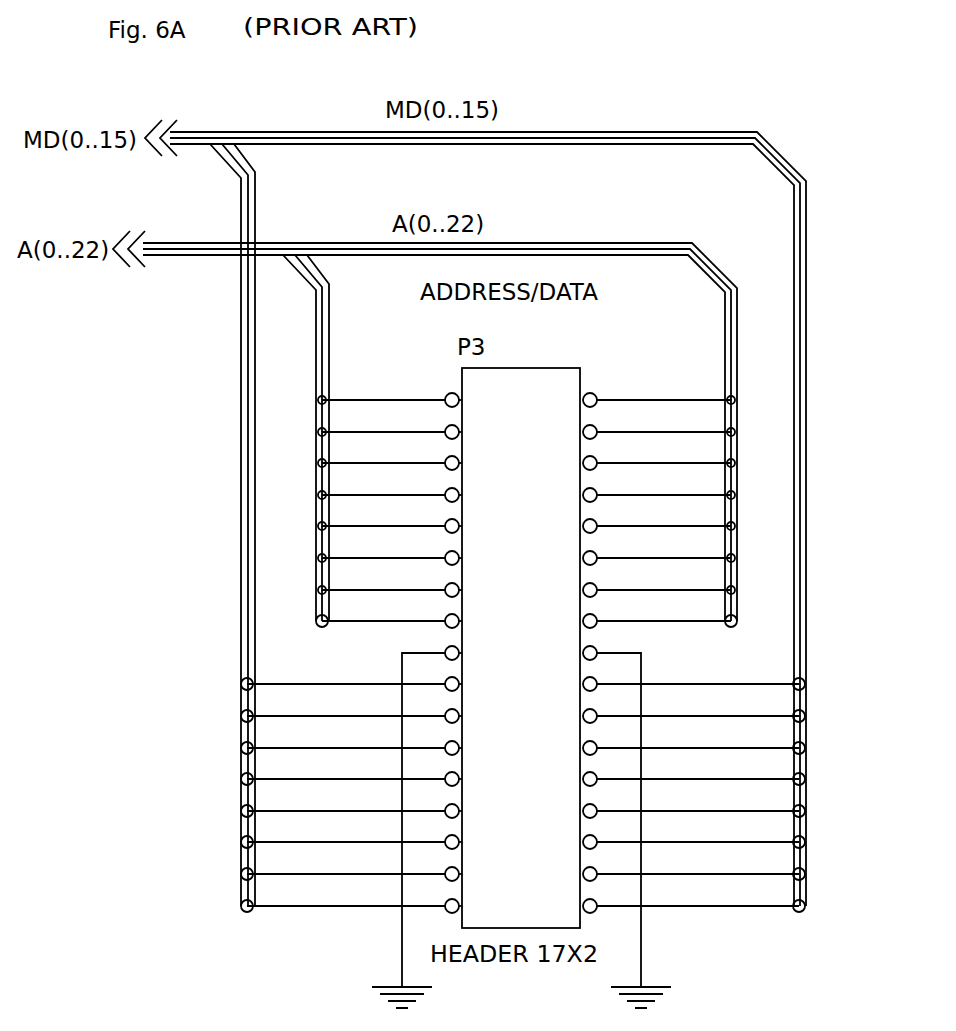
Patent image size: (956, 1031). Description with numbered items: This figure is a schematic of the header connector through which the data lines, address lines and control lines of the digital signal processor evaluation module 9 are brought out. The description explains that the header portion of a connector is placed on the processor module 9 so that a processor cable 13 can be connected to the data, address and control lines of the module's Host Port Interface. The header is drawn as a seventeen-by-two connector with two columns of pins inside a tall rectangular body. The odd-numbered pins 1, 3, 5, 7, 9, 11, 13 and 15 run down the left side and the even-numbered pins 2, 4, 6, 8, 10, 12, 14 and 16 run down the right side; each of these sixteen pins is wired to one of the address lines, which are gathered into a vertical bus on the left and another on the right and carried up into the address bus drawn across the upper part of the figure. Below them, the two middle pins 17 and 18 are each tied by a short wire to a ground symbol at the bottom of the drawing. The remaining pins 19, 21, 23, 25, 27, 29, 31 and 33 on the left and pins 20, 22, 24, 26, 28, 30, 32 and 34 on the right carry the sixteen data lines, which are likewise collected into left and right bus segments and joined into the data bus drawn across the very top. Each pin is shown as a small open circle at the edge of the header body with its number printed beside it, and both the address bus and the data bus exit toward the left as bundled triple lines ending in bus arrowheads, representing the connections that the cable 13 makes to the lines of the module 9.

The header P3 pin 1 (A0) 1 is at (397, 392).
The header P3 pin 2 (A1) 2 is at (650, 392).
The header P3 pin 3 (A2) 3 is at (397, 424).
The header P3 pin 4 (A3) 4 is at (650, 424).
The header P3 pin 5 (A4) 5 is at (397, 455).
The header P3 pin 6 (A5) 6 is at (650, 455).
The header P3 pin 7 (A6) 7 is at (397, 487).
The header P3 pin 8 (A7) 8 is at (650, 487).
The TMS320 processor evaluation module 9 is at (397, 518).
The header P3 pin 10 (A9) 10 is at (643, 518).
The header P3 pin 11 (A10) 11 is at (404, 550).
The header P3 pin 12 (A11) 12 is at (643, 550).
The TMS320 cable 13 is at (404, 582).
The header P3 pin 14 (A13) 14 is at (643, 582).
The header P3 pin 15 (A14) 15 is at (406, 613).
The header P3 pin 16 (A15) 16 is at (641, 613).
The header P3 pin 17 (ground) 17 is at (431, 825).
The header P3 pin 18 (ground) 18 is at (611, 825).
The header P3 pin 19 (MD0) 19 is at (366, 676).
The header P3 pin 20 (MD1) 20 is at (678, 676).
The header P3 pin 21 (MD2) 21 is at (366, 708).
The header P3 pin 22 (MD3) 22 is at (678, 708).
The header P3 pin 23 (MD4) 23 is at (366, 740).
The header P3 pin 24 (MD5) 24 is at (678, 740).
The header P3 pin 25 (MD6) 25 is at (366, 771).
The header P3 pin 26 (MD7) 26 is at (678, 771).
The header P3 pin 27 (MD8) 27 is at (366, 803).
The header P3 pin 28 (MD9) 28 is at (678, 803).
The header P3 pin 29 (MD10) 29 is at (366, 834).
The header P3 pin 30 (MD11) 30 is at (678, 834).
The header P3 pin 31 (MD12) 31 is at (366, 866).
The header P3 pin 32 (MD13) 32 is at (678, 866).
The header P3 pin 33 (MD14) 33 is at (369, 898).
The header P3 pin 34 (MD15) 34 is at (675, 898).